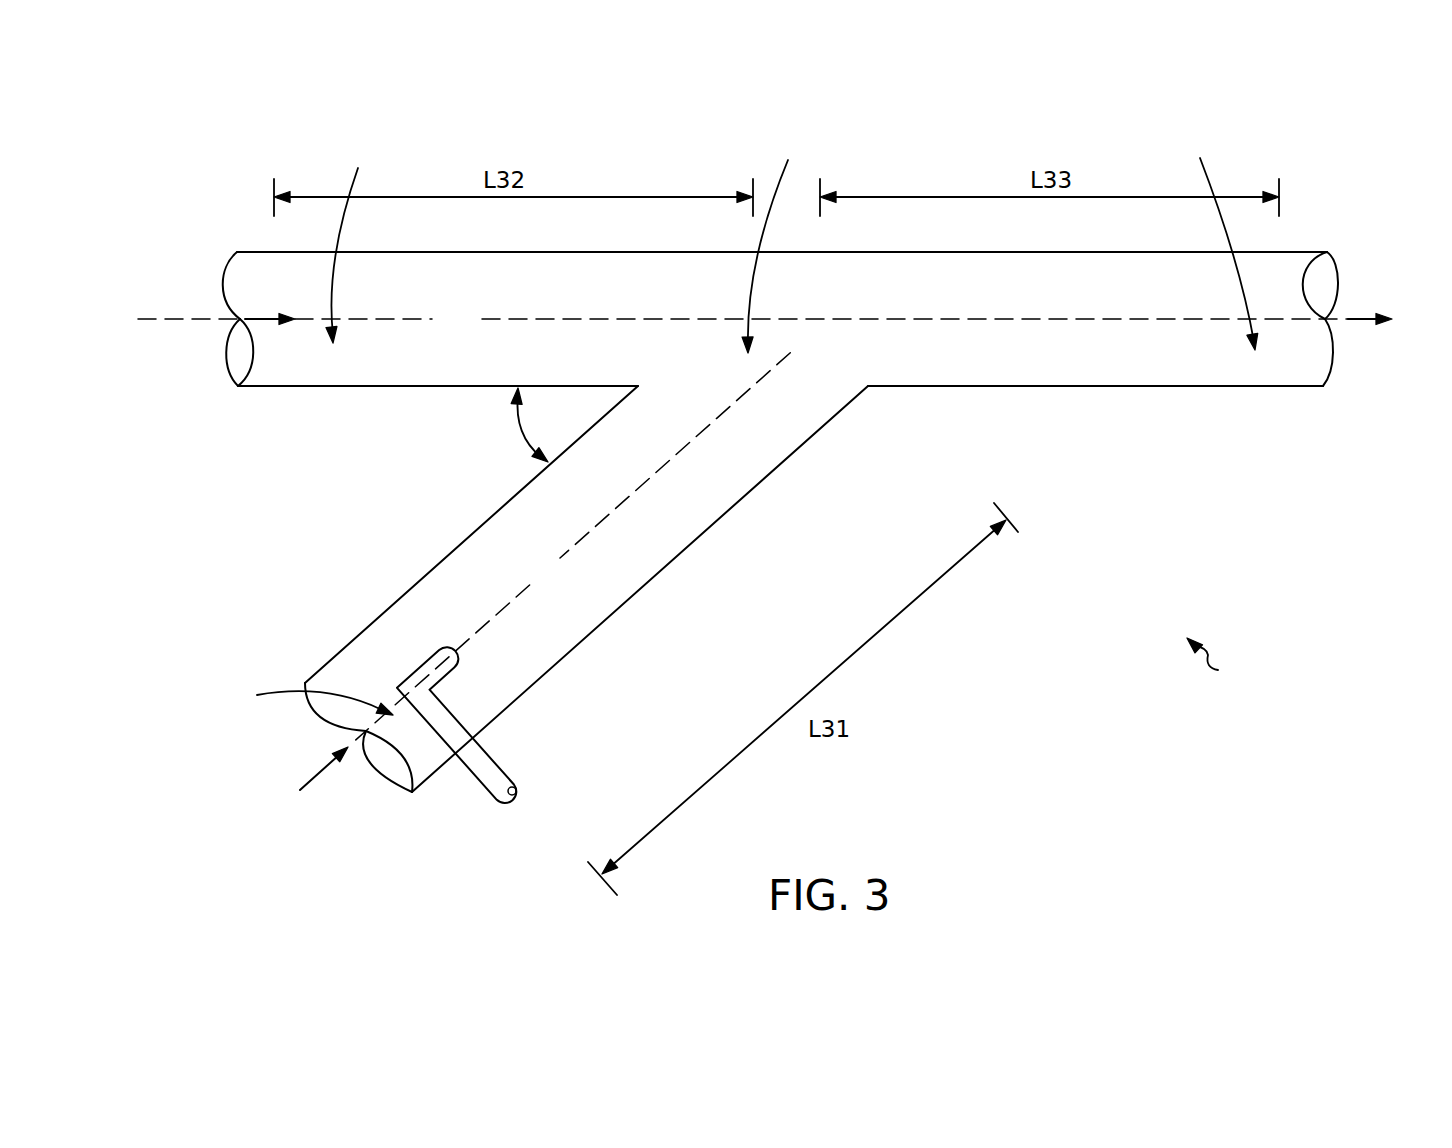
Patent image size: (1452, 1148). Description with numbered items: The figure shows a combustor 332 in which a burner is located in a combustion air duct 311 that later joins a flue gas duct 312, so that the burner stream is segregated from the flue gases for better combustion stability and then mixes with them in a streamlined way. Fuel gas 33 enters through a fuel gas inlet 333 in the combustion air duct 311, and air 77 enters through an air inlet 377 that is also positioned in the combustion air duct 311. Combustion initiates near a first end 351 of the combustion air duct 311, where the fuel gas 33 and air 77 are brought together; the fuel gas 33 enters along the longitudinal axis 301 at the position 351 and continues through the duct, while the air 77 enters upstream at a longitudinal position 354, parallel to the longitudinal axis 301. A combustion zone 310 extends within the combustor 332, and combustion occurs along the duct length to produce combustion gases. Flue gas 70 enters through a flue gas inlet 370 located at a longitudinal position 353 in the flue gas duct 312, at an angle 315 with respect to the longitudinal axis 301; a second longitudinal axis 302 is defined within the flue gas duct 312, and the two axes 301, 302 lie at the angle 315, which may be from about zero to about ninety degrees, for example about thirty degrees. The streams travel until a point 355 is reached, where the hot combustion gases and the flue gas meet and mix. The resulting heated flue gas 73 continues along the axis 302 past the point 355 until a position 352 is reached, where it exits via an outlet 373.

The fuel gas 33 is at (528, 746).
The flue gas 70 is at (263, 317).
The heated flue gas 73 is at (1365, 320).
The air 77 is at (324, 772).
The longitudinal axis 301 is at (610, 510).
The second longitudinal axis 302 is at (187, 321).
The combustion zone 310 is at (770, 445).
The combustion air duct 311 is at (565, 590).
The flue gas duct 312 is at (480, 334).
The angle 315 is at (576, 436).
The combustor 332 is at (1228, 660).
The fuel gas inlet 333 is at (513, 778).
The first end of the combustion air duct 351 is at (467, 652).
The position 352 is at (1219, 237).
The longitudinal position 353 is at (355, 242).
The longitudinal position 354 is at (301, 699).
The point 355 is at (777, 242).
The flue gas inlet 370 is at (363, 387).
The outlet 373 is at (1300, 252).
The air inlet 377 is at (335, 653).